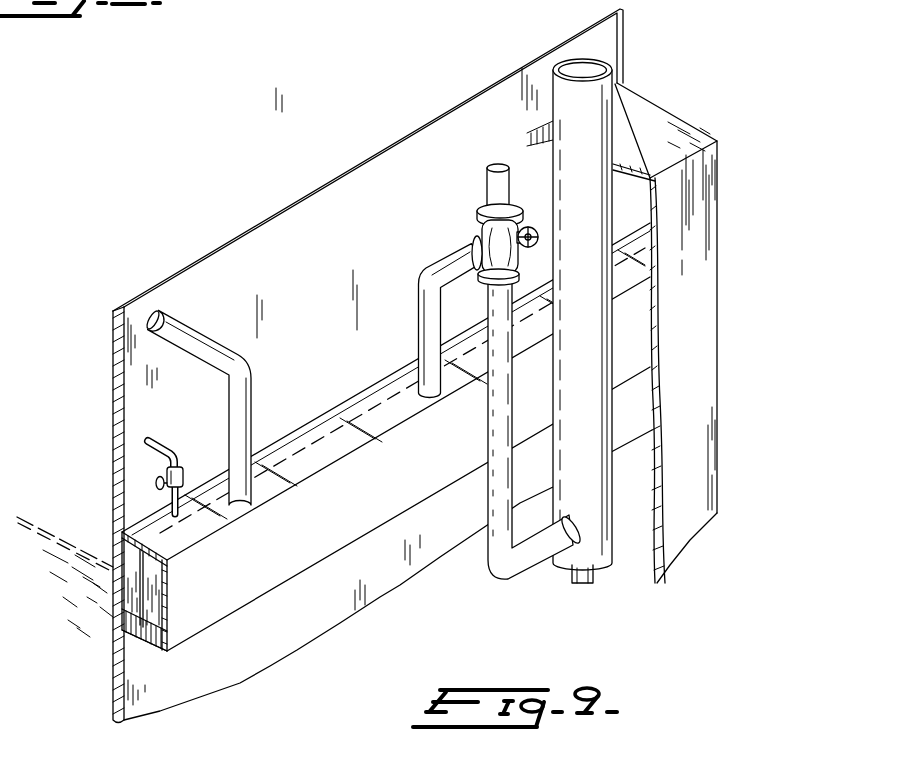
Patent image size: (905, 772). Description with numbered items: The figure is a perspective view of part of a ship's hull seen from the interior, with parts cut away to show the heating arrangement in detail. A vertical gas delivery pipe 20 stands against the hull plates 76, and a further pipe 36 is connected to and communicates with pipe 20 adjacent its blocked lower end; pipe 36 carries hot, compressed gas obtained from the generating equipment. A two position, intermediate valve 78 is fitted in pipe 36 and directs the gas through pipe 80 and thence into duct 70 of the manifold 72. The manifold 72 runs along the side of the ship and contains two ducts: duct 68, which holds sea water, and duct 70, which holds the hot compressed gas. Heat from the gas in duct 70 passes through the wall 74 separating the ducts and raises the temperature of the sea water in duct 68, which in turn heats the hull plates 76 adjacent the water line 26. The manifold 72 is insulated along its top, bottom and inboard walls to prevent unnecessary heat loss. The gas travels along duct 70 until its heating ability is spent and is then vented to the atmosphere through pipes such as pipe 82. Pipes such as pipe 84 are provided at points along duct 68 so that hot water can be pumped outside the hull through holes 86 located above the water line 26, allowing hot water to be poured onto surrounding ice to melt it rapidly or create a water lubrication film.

The gas delivery pipe 20 is at (592, 114).
The water line 26 is at (43, 534).
The pipe 36 is at (498, 448).
The duct 68 is at (132, 555).
The duct 70 is at (152, 608).
The manifold 72 is at (339, 531).
The wall 74 is at (143, 575).
The hull plates 76 is at (118, 605).
The two position intermediate valve 78 is at (481, 232).
The pipe 80 is at (425, 308).
The vent pipe 82 is at (243, 398).
The pipe 84 is at (178, 456).
The hole 86 is at (146, 443).